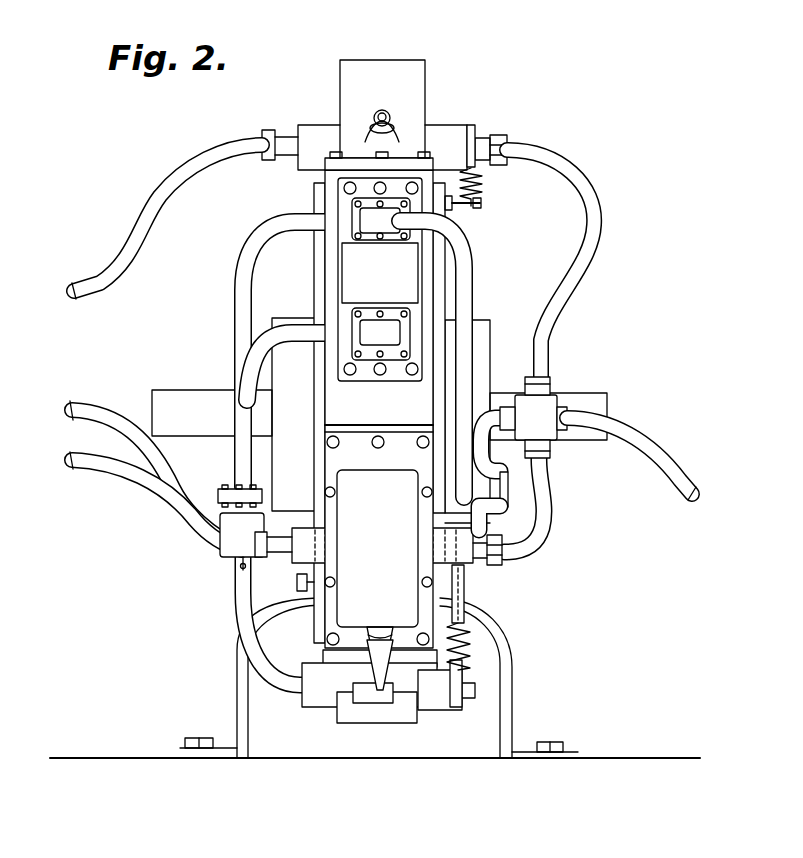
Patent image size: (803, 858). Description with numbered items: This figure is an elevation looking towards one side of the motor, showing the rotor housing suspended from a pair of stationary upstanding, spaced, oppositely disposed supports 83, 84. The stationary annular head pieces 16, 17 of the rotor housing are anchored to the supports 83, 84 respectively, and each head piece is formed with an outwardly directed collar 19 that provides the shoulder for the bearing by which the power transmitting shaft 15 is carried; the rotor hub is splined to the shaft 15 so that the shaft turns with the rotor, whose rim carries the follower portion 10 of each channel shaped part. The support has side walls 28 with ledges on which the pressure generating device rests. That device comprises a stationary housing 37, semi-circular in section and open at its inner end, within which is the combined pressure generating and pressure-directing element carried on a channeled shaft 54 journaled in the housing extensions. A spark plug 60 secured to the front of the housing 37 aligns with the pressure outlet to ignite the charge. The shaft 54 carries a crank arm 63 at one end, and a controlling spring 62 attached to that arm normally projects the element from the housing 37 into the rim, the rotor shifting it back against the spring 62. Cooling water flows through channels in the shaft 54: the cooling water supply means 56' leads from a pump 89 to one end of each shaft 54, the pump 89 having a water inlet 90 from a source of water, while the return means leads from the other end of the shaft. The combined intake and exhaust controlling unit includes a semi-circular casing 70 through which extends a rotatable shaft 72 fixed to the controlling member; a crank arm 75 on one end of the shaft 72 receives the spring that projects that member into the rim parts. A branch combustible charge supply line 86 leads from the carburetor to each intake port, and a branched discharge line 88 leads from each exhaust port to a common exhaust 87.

The follower portion 10 is at (386, 718).
The power transmitting shaft 15 is at (594, 405).
The head piece 16 is at (317, 272).
The head piece 17 is at (440, 277).
The collar 19 is at (282, 319).
The side walls 28 is at (450, 666).
The stationary housing 37 is at (429, 342).
The channeled shaft 54 is at (484, 140).
The cooling water supply means 56' is at (362, 351).
The spark plug 60 is at (372, 113).
The controlling spring 62 is at (483, 183).
The crank arm 63 is at (471, 125).
The casing 70 is at (403, 270).
The rotatable shaft 72 is at (476, 690).
The crank arm 75 is at (457, 708).
The support 83 is at (238, 676).
The support 84 is at (512, 660).
The branch combustible charge supply line 86 is at (245, 380).
The common exhaust 87 is at (503, 537).
The branched discharge line 88 is at (466, 296).
The pump 89 is at (545, 410).
The water inlet 90 is at (631, 450).